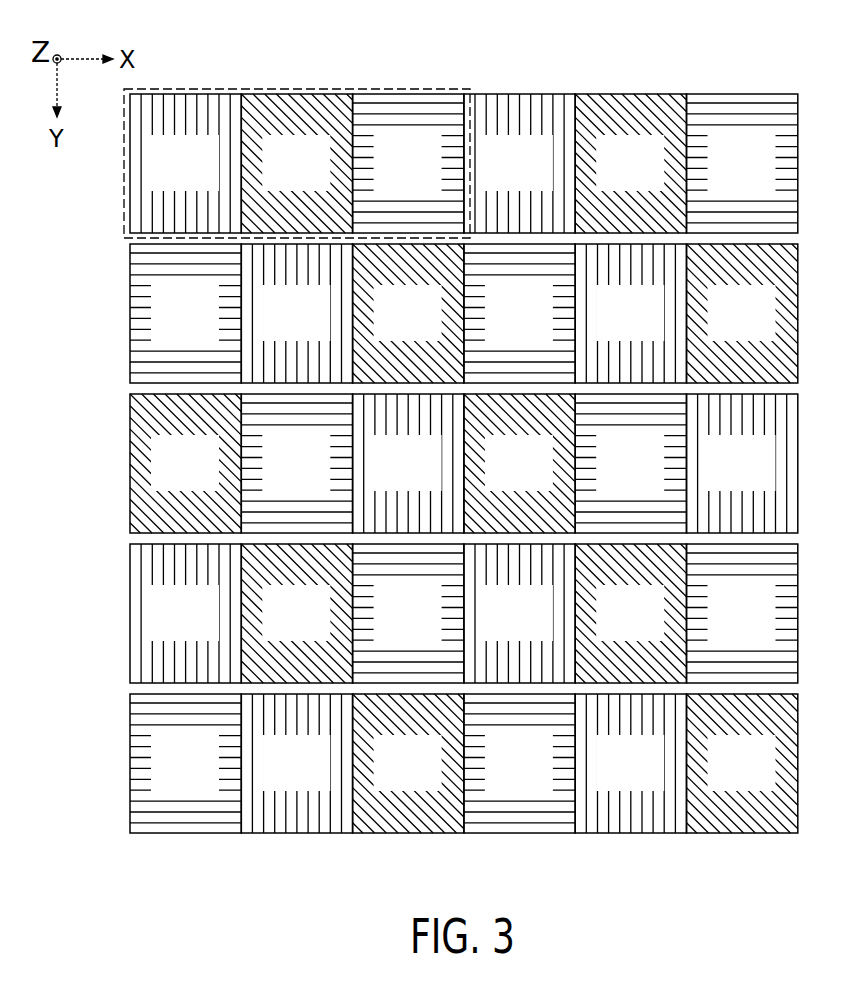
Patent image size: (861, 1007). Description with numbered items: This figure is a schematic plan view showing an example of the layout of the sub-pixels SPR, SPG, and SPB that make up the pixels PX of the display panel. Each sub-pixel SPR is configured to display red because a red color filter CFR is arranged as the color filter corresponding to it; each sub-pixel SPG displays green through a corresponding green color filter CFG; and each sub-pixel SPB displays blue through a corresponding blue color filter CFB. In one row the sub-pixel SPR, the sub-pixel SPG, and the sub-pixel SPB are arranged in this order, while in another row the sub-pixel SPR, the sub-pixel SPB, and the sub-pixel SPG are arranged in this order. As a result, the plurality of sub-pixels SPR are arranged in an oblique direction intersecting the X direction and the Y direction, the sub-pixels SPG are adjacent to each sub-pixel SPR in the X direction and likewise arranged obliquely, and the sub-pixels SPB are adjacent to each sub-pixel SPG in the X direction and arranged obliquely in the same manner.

The pixel PX is at (273, 88).
The sub-pixel SPR is at (464, 463).
The sub-pixel SPG is at (464, 463).
The sub-pixel SPB is at (464, 463).
The red color filter CFR is at (464, 463).
The green color filter CFG is at (464, 463).
The blue color filter CFB is at (464, 463).